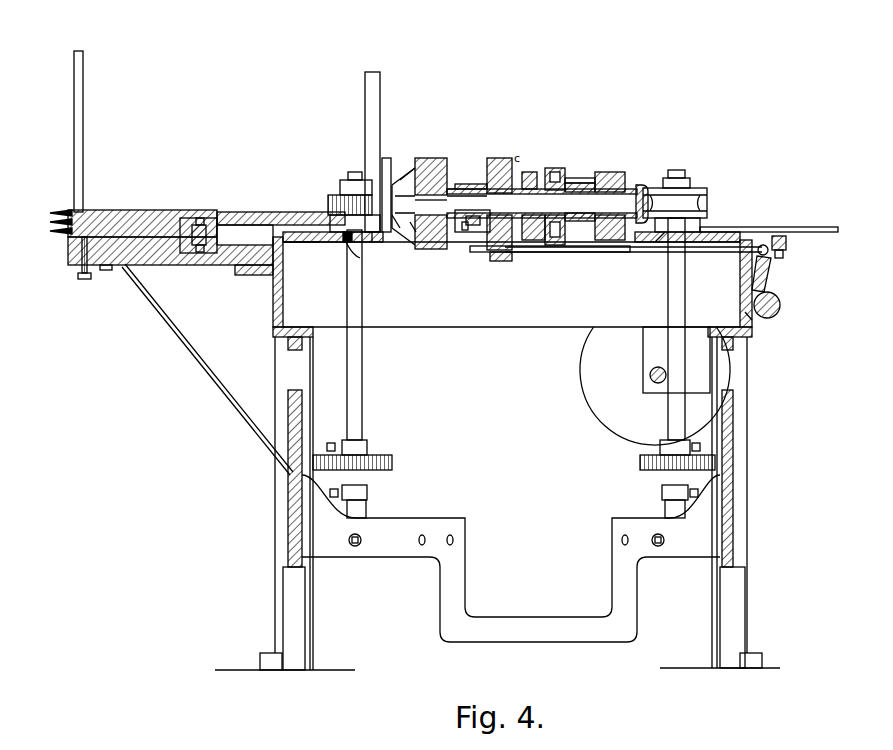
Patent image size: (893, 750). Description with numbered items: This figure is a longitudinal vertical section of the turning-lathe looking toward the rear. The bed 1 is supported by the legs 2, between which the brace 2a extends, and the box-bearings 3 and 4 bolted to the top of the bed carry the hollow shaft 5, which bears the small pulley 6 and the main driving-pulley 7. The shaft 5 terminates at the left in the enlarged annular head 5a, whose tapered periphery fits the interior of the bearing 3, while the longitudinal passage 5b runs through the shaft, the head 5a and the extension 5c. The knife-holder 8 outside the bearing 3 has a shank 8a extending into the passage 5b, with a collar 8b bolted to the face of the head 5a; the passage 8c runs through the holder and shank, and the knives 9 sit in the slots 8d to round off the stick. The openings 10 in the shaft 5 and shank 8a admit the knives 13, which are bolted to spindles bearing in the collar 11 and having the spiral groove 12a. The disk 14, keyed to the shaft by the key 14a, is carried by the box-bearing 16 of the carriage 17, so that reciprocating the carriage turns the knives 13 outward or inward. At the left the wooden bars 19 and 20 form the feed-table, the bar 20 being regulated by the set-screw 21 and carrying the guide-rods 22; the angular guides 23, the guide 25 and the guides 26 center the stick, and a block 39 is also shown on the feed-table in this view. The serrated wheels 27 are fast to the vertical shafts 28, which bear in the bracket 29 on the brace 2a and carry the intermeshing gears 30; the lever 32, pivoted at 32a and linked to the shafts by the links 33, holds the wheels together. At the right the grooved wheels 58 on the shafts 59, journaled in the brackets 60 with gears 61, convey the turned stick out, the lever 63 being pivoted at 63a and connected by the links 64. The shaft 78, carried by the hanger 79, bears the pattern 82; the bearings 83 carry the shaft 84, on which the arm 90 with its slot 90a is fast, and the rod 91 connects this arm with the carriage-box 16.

The bed 1 is at (315, 248).
The legs 2 is at (275, 518).
The brace 2a is at (511, 558).
The box-bearing 3 is at (440, 162).
The box-bearing 4 is at (608, 172).
The hollow shaft 5 is at (578, 180).
The annular head 5a is at (456, 172).
The longitudinal passage 5b is at (580, 209).
The extension 5c is at (645, 184).
The small pulley 6 is at (584, 178).
The main driving-pulley 7 is at (560, 169).
The knife-holder 8 is at (404, 185).
The shank 8a is at (475, 197).
The collar 8b is at (416, 165).
The longitudinal passage 8c is at (431, 204).
The slots 8d is at (401, 209).
The knives 9 is at (405, 232).
The openings 10 is at (478, 232).
The collar 11 is at (530, 173).
The spiral groove 12a is at (472, 225).
The knives 13 is at (462, 232).
The disk 14 is at (542, 203).
The key 14a is at (485, 184).
The box-bearing 16 is at (495, 165).
The carriage 17 is at (497, 262).
The wooden bar 19 is at (153, 268).
The wooden bar 20 is at (141, 213).
The set-screw 21 is at (85, 282).
The guide-rods 22 is at (80, 145).
The angular guides 23 is at (388, 165).
The guide 25 is at (372, 242).
The angular guides 26 is at (376, 108).
The serrated wheels 27 is at (328, 200).
The vertical shafts 28 is at (360, 300).
The bracket 29 is at (365, 508).
The gears 30 is at (393, 462).
The lever 32 is at (265, 213).
The pivot 32a is at (368, 255).
The links 33 is at (344, 244).
The clamp block 39 is at (220, 220).
The grooved wheels 58 is at (707, 203).
The vertical shafts 59 is at (684, 300).
The brackets 60 is at (665, 506).
The gears 61 is at (640, 462).
The lever 63 is at (806, 228).
The pivot 63a is at (665, 242).
The links 64 is at (700, 226).
The shaft 78 is at (650, 376).
The hanger 79 is at (676, 360).
The pattern 82 is at (655, 386).
The bearings 83 is at (752, 322).
The shaft 84 is at (780, 307).
The arm 90 is at (778, 284).
The slot 90a is at (784, 252).
The rod 91 is at (608, 253).